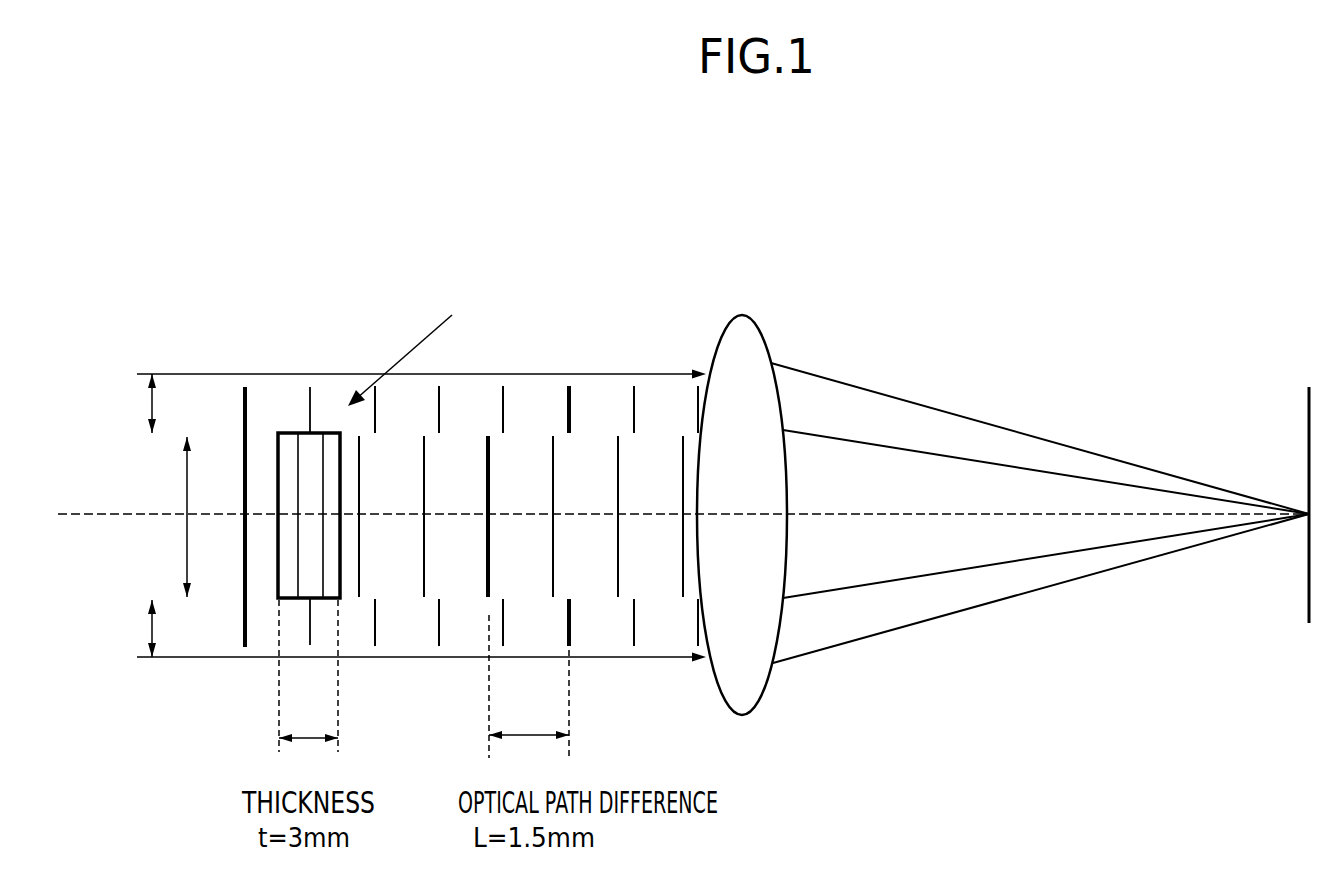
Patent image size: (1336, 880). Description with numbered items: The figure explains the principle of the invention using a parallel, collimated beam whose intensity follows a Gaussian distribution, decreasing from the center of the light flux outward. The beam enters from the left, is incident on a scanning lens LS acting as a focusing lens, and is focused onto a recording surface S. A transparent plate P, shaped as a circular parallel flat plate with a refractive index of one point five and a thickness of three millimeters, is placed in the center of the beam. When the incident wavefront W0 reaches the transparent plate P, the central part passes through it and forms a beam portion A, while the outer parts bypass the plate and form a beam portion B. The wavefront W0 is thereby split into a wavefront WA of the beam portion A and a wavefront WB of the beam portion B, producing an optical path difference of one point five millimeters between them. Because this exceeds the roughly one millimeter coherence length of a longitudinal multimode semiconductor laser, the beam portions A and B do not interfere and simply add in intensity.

The wavefront W0 is at (243, 410).
The transparent plate P is at (282, 433).
The wavefront of the beam portion A WA is at (488, 562).
The wavefront of the beam portion B WB is at (569, 632).
The scanning lens LS is at (747, 313).
The recording surface S is at (1307, 426).
The beam portion A is at (167, 517).
The beam portion B is at (133, 515).